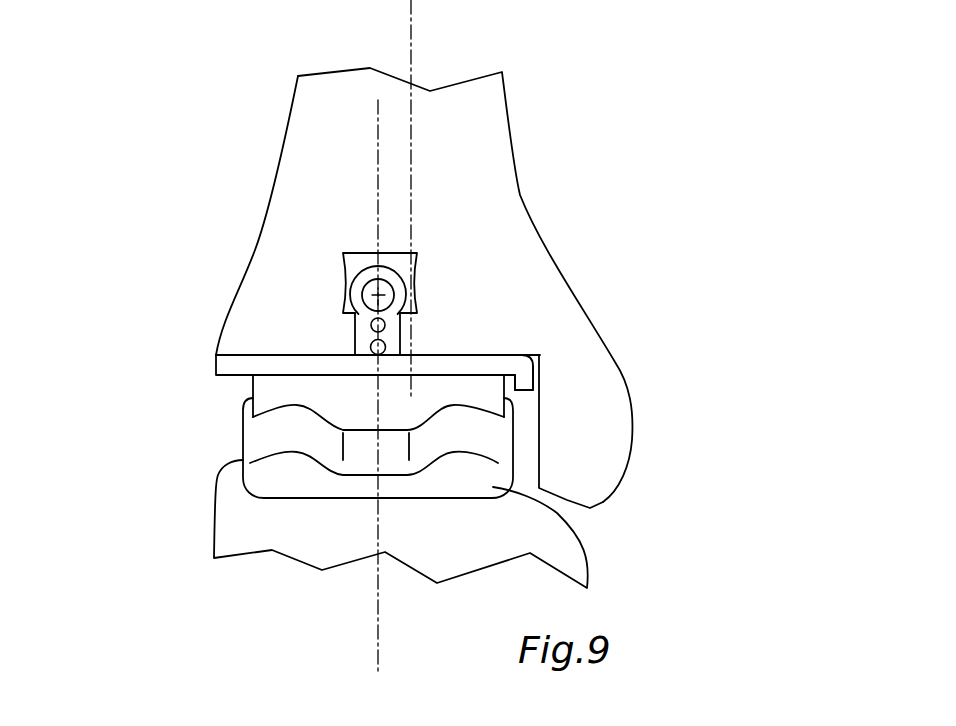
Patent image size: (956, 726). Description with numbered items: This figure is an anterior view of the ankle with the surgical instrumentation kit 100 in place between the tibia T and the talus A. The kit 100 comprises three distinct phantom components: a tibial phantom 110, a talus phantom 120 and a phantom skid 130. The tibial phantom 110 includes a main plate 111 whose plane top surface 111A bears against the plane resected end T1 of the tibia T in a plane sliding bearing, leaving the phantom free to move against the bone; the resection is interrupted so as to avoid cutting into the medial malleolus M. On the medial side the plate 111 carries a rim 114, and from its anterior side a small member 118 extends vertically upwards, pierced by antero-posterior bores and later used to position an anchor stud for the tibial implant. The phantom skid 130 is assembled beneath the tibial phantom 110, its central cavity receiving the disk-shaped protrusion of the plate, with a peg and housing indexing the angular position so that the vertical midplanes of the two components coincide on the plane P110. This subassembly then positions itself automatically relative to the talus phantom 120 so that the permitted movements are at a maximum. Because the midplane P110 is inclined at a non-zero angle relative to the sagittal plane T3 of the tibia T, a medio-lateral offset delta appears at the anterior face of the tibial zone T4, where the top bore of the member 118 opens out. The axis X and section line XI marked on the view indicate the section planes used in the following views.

The instrumentation kit 100 is at (207, 482).
The tibial phantom 110 is at (232, 352).
The main plate 111 is at (512, 356).
The plane top surface 111A is at (491, 351).
The rim 114 is at (525, 383).
The member 118 is at (550, 203).
The talus phantom 120 is at (231, 435).
The phantom skid 130 is at (239, 395).
The tibia T is at (252, 220).
The medial malleolus M is at (600, 450).
The talus A is at (193, 519).
The resected end of the tibia T1 is at (452, 368).
The sagittal plane of the tibia T3 is at (411, 55).
The anterior zone of the tibia T4 is at (384, 302).
The section axis X is at (57, 366).
The section line XI is at (380, 115).
The vertical midplane of the plate P110 is at (380, 178).
The medio-lateral offset delta is at (348, 190).